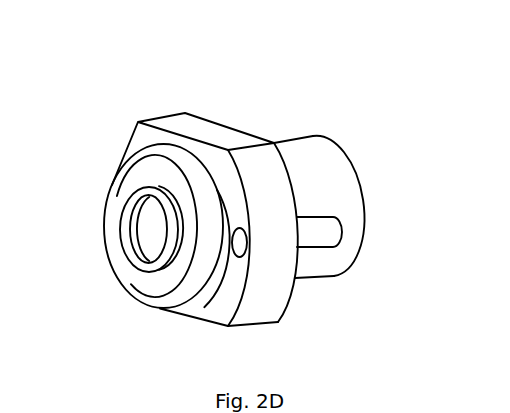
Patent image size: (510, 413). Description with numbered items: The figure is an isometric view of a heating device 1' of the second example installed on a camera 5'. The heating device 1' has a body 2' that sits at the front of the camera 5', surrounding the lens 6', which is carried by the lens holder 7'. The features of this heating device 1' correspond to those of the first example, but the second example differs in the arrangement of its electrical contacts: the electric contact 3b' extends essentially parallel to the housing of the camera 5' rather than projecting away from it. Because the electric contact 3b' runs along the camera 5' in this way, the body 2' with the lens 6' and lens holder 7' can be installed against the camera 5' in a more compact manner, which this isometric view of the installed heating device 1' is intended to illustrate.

The heating device 1' is at (224, 176).
The body 2' is at (205, 190).
The electric contact 3b' is at (333, 272).
The camera 5' is at (321, 217).
The lens 6' is at (131, 207).
The lens holder 7' is at (157, 194).